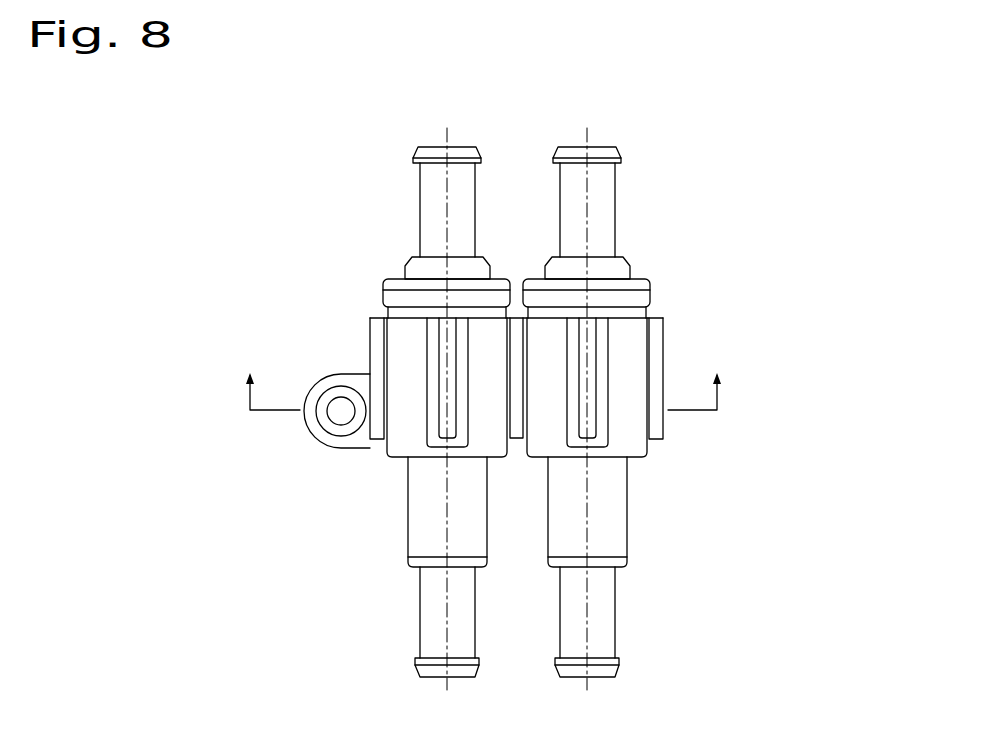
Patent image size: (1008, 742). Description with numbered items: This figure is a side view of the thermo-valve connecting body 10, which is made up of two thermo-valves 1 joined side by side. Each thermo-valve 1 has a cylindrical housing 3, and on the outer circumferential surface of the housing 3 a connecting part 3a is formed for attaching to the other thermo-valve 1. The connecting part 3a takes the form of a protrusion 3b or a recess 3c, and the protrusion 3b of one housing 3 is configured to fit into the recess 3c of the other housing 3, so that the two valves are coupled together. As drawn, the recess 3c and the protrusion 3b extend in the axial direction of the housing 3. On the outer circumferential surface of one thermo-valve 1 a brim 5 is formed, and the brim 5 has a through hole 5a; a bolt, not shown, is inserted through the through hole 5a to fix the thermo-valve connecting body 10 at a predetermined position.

The thermo-valve connecting body 10 is at (199, 178).
The thermo-valve 1 is at (400, 202).
The housing 3 is at (400, 328).
The connecting part 3a is at (501, 314).
The protrusion 3b is at (371, 343).
The recess 3c is at (422, 433).
The brim 5 is at (337, 444).
The through hole 5a is at (337, 415).